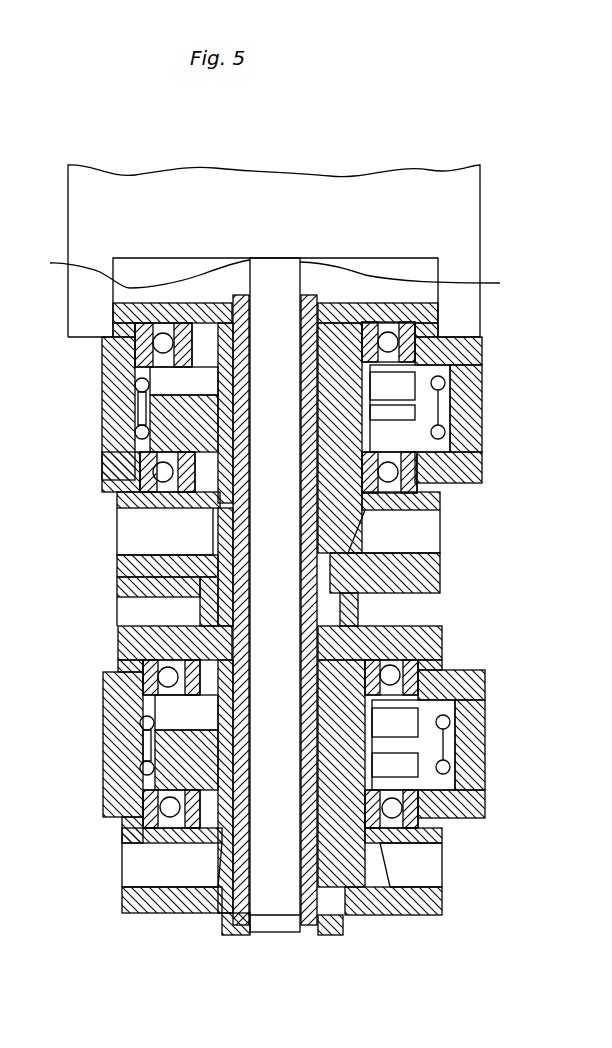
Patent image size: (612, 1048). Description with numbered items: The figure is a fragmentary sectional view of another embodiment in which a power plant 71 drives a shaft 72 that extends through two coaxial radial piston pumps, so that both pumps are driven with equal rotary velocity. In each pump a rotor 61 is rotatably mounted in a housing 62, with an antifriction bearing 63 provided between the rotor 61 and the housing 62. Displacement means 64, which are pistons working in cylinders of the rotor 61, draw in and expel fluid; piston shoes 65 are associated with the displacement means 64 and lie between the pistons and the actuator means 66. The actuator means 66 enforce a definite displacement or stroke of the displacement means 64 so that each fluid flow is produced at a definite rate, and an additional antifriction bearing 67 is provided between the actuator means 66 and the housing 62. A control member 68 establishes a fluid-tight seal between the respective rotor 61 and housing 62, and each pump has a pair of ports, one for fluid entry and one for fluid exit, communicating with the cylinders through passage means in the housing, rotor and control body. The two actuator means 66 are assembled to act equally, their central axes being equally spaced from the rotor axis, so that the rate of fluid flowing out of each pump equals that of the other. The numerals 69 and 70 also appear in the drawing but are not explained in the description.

The rotor 61 is at (320, 402).
The housing 62 is at (472, 460).
The antifriction bearing 63 is at (438, 335).
The displacement means 64 is at (225, 428).
The piston shoe 65 is at (140, 430).
The actuator means 66 is at (422, 410).
The antifriction bearing 67 is at (446, 431).
The control member 68 is at (303, 515).
The housing recess 69 is at (425, 540).
The housing recess 70 is at (130, 535).
The power plant 71 is at (470, 228).
The shaft 72 is at (262, 280).